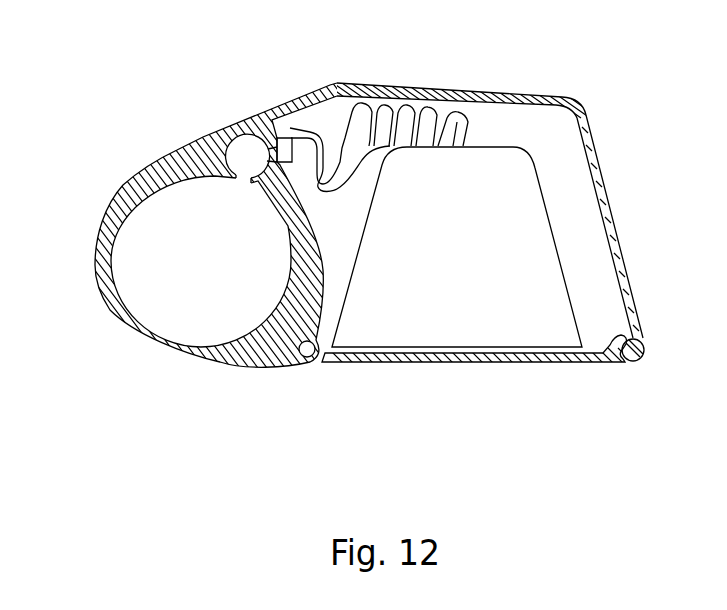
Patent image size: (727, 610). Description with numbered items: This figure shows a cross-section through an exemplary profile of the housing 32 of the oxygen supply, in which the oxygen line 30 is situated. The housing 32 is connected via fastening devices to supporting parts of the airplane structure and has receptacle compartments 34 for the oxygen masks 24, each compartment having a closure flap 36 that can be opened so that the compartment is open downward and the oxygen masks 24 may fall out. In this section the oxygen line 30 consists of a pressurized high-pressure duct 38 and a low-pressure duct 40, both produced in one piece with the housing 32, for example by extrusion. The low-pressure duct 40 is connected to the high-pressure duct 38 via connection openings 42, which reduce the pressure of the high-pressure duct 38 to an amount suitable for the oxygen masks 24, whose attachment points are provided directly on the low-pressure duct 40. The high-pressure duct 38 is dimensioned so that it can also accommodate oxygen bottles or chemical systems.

The oxygen masks 24 is at (547, 197).
The oxygen line 30 is at (96, 282).
The housing 32 is at (462, 89).
The receptacle compartments 34 is at (593, 248).
The closure flap 36 is at (423, 358).
The high-pressure duct 38 is at (168, 333).
The low-pressure duct 40 is at (243, 152).
The connection openings 42 is at (236, 184).